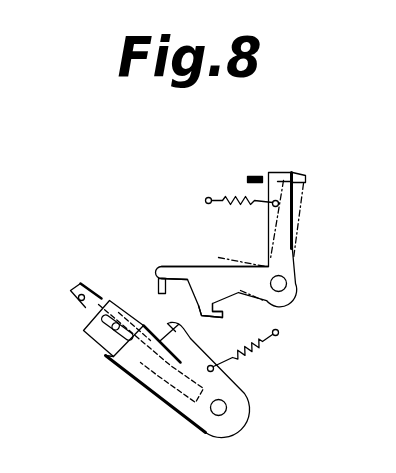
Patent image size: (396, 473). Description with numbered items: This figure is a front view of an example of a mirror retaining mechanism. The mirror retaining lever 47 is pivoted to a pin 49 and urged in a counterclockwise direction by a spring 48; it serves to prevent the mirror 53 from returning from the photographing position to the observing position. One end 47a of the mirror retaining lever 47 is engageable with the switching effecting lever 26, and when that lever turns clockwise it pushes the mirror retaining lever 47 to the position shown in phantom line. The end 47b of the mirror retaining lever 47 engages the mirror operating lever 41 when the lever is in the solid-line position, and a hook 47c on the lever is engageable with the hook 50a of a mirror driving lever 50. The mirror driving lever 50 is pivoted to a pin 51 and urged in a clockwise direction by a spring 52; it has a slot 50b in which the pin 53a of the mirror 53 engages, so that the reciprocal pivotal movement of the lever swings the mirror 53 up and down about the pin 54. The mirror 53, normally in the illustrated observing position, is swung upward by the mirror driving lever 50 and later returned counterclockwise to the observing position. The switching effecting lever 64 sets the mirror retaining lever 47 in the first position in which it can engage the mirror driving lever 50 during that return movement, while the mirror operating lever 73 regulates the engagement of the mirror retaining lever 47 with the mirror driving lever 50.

The switching effecting lever 26 is at (267, 153).
The switching effecting lever 64 is at (253, 175).
The mirror operating lever 41 is at (108, 273).
The mirror operating lever 73 is at (153, 286).
The mirror retaining lever 47 is at (283, 247).
The one end of mirror retaining lever 47a is at (305, 184).
The end of mirror retaining lever 47b is at (165, 266).
The hook 47c is at (222, 317).
The spring 48 is at (243, 205).
The pin 49 is at (287, 283).
The mirror driving lever 50 is at (140, 371).
The hook 50a is at (165, 319).
The slot 50b is at (113, 362).
The pin 51 is at (226, 407).
The spring 52 is at (255, 358).
The mirror 53 is at (157, 386).
The pin of mirror 53a is at (97, 333).
The pin 54 is at (70, 294).